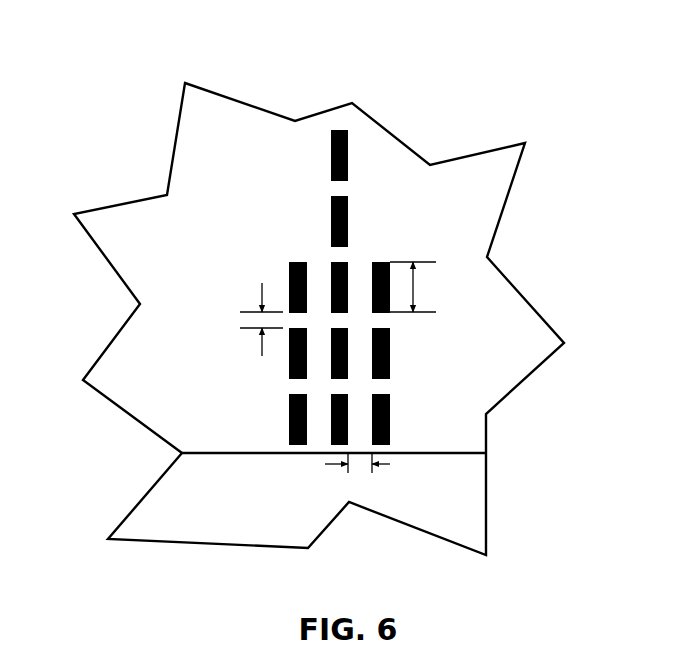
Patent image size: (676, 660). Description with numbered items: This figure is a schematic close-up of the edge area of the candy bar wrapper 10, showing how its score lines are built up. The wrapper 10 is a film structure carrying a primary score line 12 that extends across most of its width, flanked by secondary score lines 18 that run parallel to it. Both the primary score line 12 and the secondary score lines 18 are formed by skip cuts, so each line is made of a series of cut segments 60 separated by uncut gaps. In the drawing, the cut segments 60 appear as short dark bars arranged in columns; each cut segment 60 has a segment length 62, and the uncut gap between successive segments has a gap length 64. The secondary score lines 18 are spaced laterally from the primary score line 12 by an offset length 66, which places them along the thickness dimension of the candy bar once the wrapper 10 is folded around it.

The candy bar wrapper 10 is at (441, 377).
The primary score line 12 is at (340, 129).
The secondary score lines 18 is at (380, 262).
The cut segments 60 is at (331, 217).
The segment length 62 is at (418, 292).
The gap length 64 is at (252, 320).
The offset length 66 is at (358, 468).